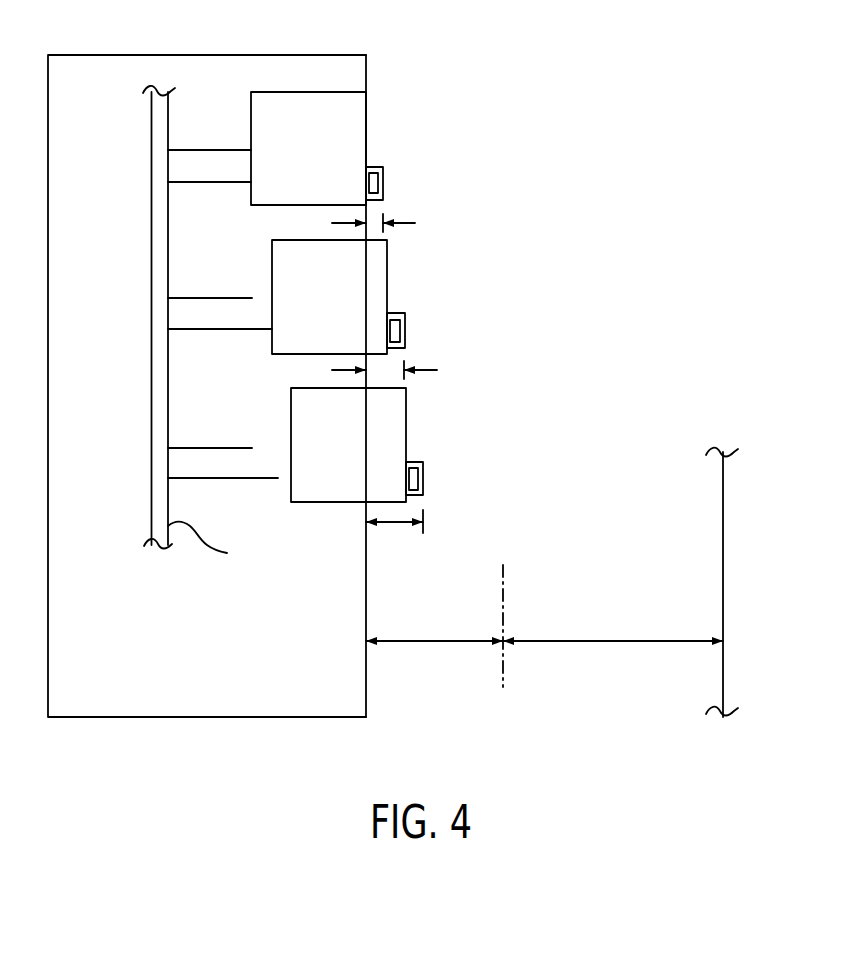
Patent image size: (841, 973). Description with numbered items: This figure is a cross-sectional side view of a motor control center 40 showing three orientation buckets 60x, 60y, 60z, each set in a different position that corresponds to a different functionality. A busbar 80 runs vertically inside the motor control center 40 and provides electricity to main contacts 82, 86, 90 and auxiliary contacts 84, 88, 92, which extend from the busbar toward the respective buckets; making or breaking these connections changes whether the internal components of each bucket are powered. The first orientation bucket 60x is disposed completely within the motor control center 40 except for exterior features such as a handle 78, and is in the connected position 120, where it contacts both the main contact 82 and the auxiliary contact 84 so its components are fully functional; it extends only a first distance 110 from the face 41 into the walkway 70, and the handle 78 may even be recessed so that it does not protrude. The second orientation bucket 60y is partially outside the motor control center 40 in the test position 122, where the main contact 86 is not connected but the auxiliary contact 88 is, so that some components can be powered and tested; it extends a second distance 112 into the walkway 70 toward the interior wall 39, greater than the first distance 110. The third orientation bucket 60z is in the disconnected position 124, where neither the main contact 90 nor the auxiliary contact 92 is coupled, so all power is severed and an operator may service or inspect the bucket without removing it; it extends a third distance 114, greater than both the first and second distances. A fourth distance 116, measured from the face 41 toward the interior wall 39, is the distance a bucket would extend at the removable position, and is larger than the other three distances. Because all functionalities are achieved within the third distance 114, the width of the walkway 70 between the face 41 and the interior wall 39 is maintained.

The interior wall 39 is at (723, 559).
The motor control center 40 is at (171, 629).
The face 41 is at (366, 591).
The first orientation bucket 60x is at (366, 135).
The second orientation bucket 60y is at (387, 283).
The third orientation bucket 60z is at (406, 430).
The walkway 70 is at (566, 539).
The handle 78 is at (383, 192).
The busbar 80 is at (151, 147).
The main contact 82 is at (232, 150).
The auxiliary contact 84 is at (195, 182).
The main contact 86 is at (232, 298).
The auxiliary contact 88 is at (195, 329).
The main contact 90 is at (232, 448).
The auxiliary contact 92 is at (195, 478).
The first distance 110 is at (403, 221).
The second distance 112 is at (427, 368).
The third distance 114 is at (393, 524).
The fourth distance 116 is at (433, 643).
The connected position 120 is at (431, 153).
The test position 122 is at (437, 325).
The disconnected position 124 is at (460, 477).